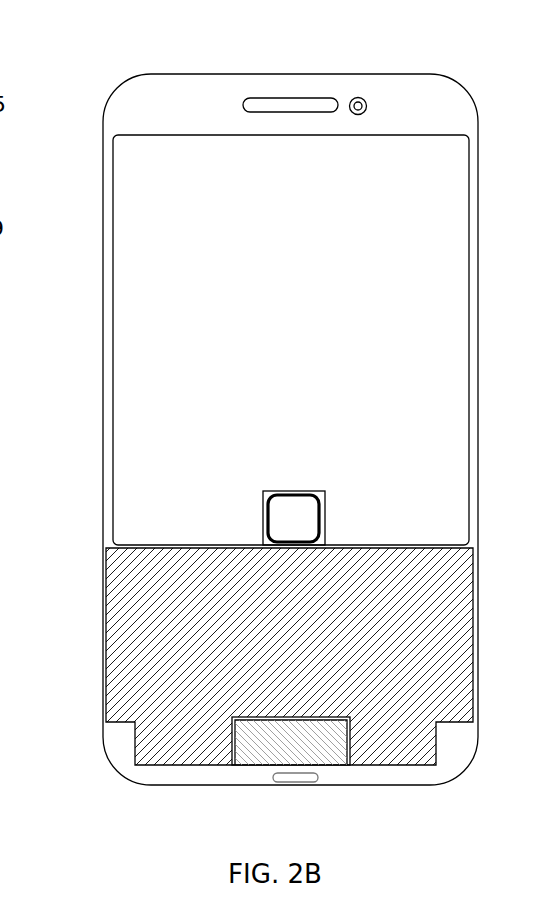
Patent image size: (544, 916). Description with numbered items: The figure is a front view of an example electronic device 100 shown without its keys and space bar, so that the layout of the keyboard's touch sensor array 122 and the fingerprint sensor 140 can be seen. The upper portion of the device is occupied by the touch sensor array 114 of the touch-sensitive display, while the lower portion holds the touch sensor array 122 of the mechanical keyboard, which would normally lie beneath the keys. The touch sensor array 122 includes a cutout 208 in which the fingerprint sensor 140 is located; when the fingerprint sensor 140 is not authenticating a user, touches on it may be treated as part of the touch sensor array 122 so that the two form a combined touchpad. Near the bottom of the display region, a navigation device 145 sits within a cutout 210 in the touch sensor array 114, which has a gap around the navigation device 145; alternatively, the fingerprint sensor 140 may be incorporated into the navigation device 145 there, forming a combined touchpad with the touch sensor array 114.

The electronic device 100 is at (198, 40).
The touch sensor array 114 is at (117, 192).
The touch sensor array 122 is at (118, 630).
The navigation device 145 is at (292, 508).
The cutout 210 is at (260, 541).
The cutout 208 is at (233, 738).
The fingerprint sensor 140 is at (318, 730).